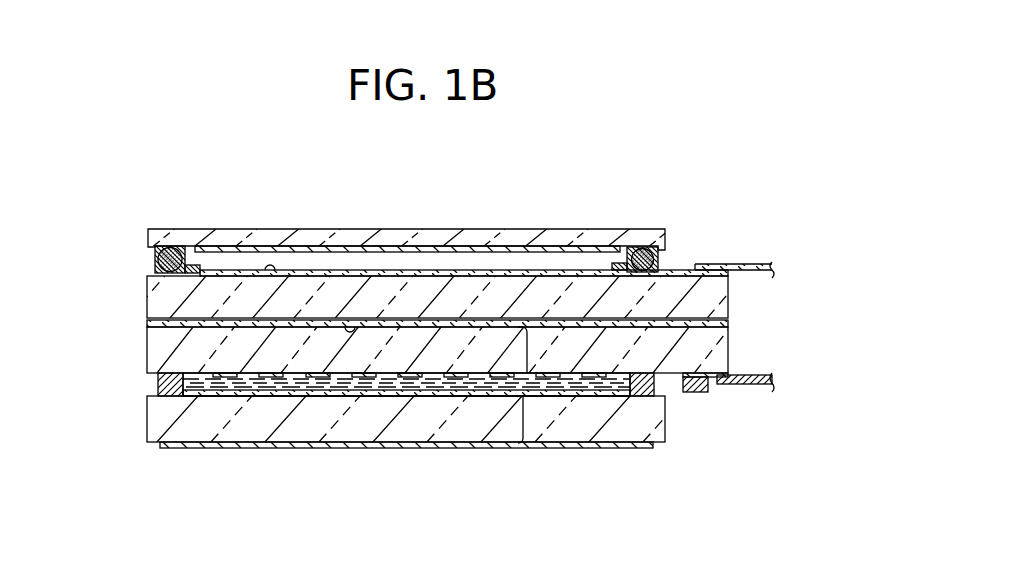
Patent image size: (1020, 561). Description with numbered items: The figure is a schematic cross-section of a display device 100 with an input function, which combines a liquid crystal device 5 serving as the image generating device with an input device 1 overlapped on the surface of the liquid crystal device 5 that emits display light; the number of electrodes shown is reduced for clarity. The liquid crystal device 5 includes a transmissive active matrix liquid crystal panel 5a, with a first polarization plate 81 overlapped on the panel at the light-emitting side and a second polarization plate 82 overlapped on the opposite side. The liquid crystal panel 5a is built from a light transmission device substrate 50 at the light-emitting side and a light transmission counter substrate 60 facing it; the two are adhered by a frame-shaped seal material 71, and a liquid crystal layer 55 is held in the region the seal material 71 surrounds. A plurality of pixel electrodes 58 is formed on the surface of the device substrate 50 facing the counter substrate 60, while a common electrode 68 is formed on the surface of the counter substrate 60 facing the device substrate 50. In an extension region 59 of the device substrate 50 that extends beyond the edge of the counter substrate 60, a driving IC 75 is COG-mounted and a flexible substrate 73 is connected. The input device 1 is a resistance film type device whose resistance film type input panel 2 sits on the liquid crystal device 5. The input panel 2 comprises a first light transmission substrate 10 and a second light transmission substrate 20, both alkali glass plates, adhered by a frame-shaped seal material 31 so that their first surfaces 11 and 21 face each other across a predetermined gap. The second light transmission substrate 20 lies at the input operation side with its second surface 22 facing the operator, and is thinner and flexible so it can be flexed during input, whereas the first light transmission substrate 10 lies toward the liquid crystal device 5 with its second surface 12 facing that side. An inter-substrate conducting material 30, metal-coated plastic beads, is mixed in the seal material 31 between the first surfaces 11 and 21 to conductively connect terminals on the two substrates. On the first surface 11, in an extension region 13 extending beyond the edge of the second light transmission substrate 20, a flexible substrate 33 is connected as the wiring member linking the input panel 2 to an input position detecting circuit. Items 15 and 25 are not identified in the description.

The display device with input function 100 is at (173, 165).
The input device 1 is at (748, 198).
The resistance film type input panel 2 is at (87, 302).
The liquid crystal device 5 is at (85, 480).
The liquid crystal panel 5a is at (527, 373).
The first light transmission substrate 10 is at (160, 302).
The first surface 11 is at (273, 278).
The second surface 12 is at (357, 323).
The extension region 13 is at (690, 250).
The electrode layer 15 is at (305, 272).
The second light transmission substrate 20 is at (165, 240).
The first surface 21 is at (425, 250).
The second surface 22 is at (460, 231).
The transparent conductive film 25 is at (515, 248).
The inter-substrate conducting material 30 is at (157, 257).
The seal material 31 is at (185, 248).
The flexible substrate 33 is at (757, 275).
The device substrate 50 is at (155, 350).
The liquid crystal layer 55 is at (482, 387).
The pixel electrodes 58 is at (317, 377).
The extension region 59 is at (707, 408).
The counter substrate 60 is at (158, 408).
The common electrode 68 is at (403, 380).
The seal material 71 is at (647, 395).
The flexible substrate 73 is at (758, 384).
The driving IC 75 is at (705, 392).
The first polarization plate 81 is at (153, 323).
The second polarization plate 82 is at (160, 446).